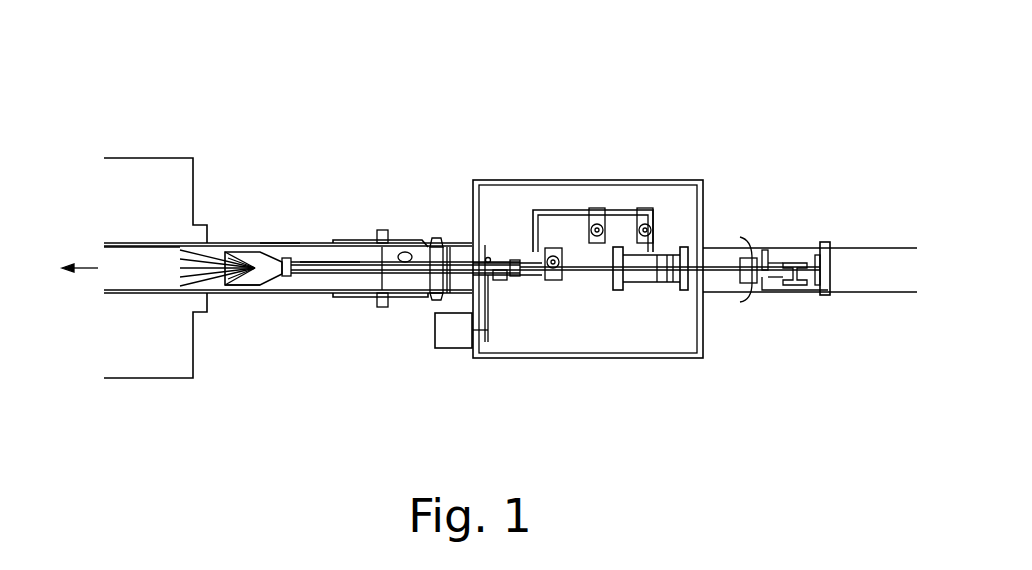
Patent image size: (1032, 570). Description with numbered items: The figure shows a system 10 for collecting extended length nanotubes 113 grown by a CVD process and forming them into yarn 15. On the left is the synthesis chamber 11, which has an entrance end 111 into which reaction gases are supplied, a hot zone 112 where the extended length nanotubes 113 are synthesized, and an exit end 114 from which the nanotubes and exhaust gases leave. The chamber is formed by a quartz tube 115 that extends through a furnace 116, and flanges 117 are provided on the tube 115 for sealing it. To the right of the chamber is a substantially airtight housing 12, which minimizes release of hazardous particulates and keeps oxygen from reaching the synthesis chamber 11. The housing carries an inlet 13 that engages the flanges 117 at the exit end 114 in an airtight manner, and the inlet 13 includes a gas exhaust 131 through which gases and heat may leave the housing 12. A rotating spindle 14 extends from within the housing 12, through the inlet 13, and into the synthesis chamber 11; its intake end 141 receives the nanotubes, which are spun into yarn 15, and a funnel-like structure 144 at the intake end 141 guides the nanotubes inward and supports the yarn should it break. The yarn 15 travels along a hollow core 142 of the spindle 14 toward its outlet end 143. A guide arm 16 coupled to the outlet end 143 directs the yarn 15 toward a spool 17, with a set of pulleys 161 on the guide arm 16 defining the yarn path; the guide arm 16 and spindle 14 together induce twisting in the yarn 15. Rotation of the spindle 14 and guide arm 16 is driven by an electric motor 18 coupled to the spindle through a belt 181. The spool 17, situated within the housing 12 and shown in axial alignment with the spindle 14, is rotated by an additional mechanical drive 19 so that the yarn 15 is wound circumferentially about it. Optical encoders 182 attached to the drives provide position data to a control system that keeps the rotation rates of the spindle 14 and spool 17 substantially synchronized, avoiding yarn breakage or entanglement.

The system 10 is at (706, 102).
The synthesis chamber 11 is at (218, 206).
The entrance end 111 is at (60, 268).
The hot zone 112 is at (137, 270).
The extended length nanotubes 113 is at (195, 295).
The exit end 114 is at (332, 257).
The quartz tube 115 is at (275, 243).
The furnace 116 is at (167, 158).
The flanges 117 is at (357, 268).
The housing 12 is at (528, 180).
The inlet 13 is at (420, 245).
The gas exhaust 131 is at (405, 252).
The rotating spindle 14 is at (302, 270).
The intake end 141 is at (258, 250).
The hollow core 142 is at (340, 273).
The outlet end 143 is at (492, 262).
The funnel-like structure 144 is at (248, 286).
The yarn 15 is at (305, 273).
The guide arm 16 is at (570, 208).
The pulleys 161 is at (600, 212).
The spool 17 is at (645, 287).
The electric motor 18 is at (452, 349).
The belt 181 is at (490, 313).
The optical encoders 182 is at (437, 316).
The mechanical drive 19 is at (833, 248).